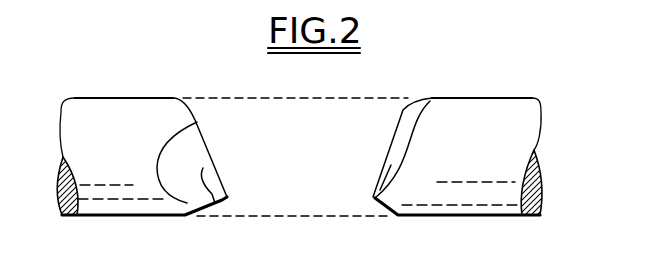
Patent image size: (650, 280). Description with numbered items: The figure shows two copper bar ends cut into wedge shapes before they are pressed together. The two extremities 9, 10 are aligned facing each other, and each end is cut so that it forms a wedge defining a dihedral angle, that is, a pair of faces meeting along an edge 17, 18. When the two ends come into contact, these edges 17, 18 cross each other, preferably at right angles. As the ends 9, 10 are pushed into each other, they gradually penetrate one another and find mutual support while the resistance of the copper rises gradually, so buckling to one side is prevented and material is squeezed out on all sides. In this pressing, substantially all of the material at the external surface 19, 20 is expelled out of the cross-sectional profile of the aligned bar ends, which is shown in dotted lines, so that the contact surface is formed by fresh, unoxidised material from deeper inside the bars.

The extremity 9 is at (118, 127).
The extremity 10 is at (478, 127).
The edge 17 is at (207, 142).
The edge 18 is at (387, 137).
The external surface 19 is at (215, 203).
The external surface 20 is at (375, 198).